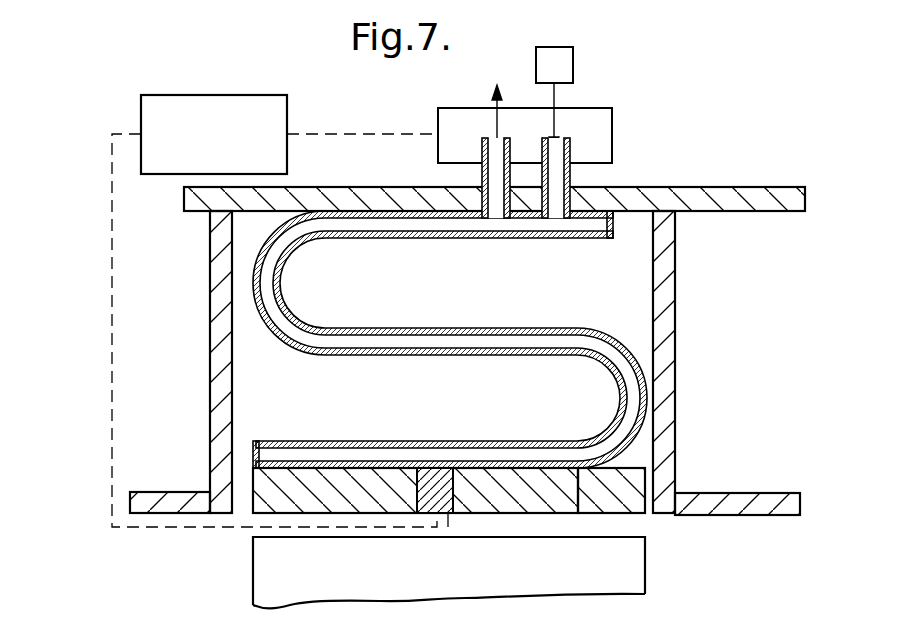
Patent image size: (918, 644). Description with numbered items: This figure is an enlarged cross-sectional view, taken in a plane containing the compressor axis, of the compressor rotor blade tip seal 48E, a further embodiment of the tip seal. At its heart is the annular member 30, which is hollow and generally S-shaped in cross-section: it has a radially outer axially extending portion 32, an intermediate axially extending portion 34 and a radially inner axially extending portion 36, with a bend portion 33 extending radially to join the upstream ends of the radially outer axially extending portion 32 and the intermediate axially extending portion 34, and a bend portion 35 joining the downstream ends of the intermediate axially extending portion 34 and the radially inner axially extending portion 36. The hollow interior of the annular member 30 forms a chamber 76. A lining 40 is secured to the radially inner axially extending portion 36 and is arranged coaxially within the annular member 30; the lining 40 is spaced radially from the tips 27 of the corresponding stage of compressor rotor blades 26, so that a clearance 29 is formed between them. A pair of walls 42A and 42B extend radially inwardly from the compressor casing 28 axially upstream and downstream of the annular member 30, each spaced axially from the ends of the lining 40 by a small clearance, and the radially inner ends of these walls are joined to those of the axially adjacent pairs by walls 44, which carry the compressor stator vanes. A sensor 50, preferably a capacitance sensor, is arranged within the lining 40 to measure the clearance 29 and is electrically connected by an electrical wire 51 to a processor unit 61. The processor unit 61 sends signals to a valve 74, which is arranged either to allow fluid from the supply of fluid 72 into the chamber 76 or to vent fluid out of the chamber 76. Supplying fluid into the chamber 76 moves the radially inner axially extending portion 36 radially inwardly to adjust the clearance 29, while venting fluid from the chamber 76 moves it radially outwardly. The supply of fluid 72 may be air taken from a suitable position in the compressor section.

The compressor rotor blades 26 is at (645, 595).
The tips 27 is at (477, 585).
The compressor casing 28 is at (638, 197).
The clearance 29 is at (477, 519).
The annular member 30 is at (515, 328).
The radially outer axially extending portion 32 is at (440, 329).
The bend portion 33 is at (451, 349).
The intermediate axially extending portion 34 is at (538, 352).
The bend portion 35 is at (490, 349).
The radially inner axially extending portion 36 is at (440, 329).
The lining 40 is at (518, 494).
The wall 42A is at (219, 298).
The wall 42B is at (667, 302).
The wall 44 is at (188, 492).
The compressor rotor blade tip seal 48E is at (718, 135).
The sensor 50 is at (447, 505).
The electrical wire 51 is at (110, 340).
The processor unit 61 is at (275, 117).
The supply of fluid 72 is at (568, 63).
The valve 74 is at (612, 133).
The chamber 76 is at (488, 339).